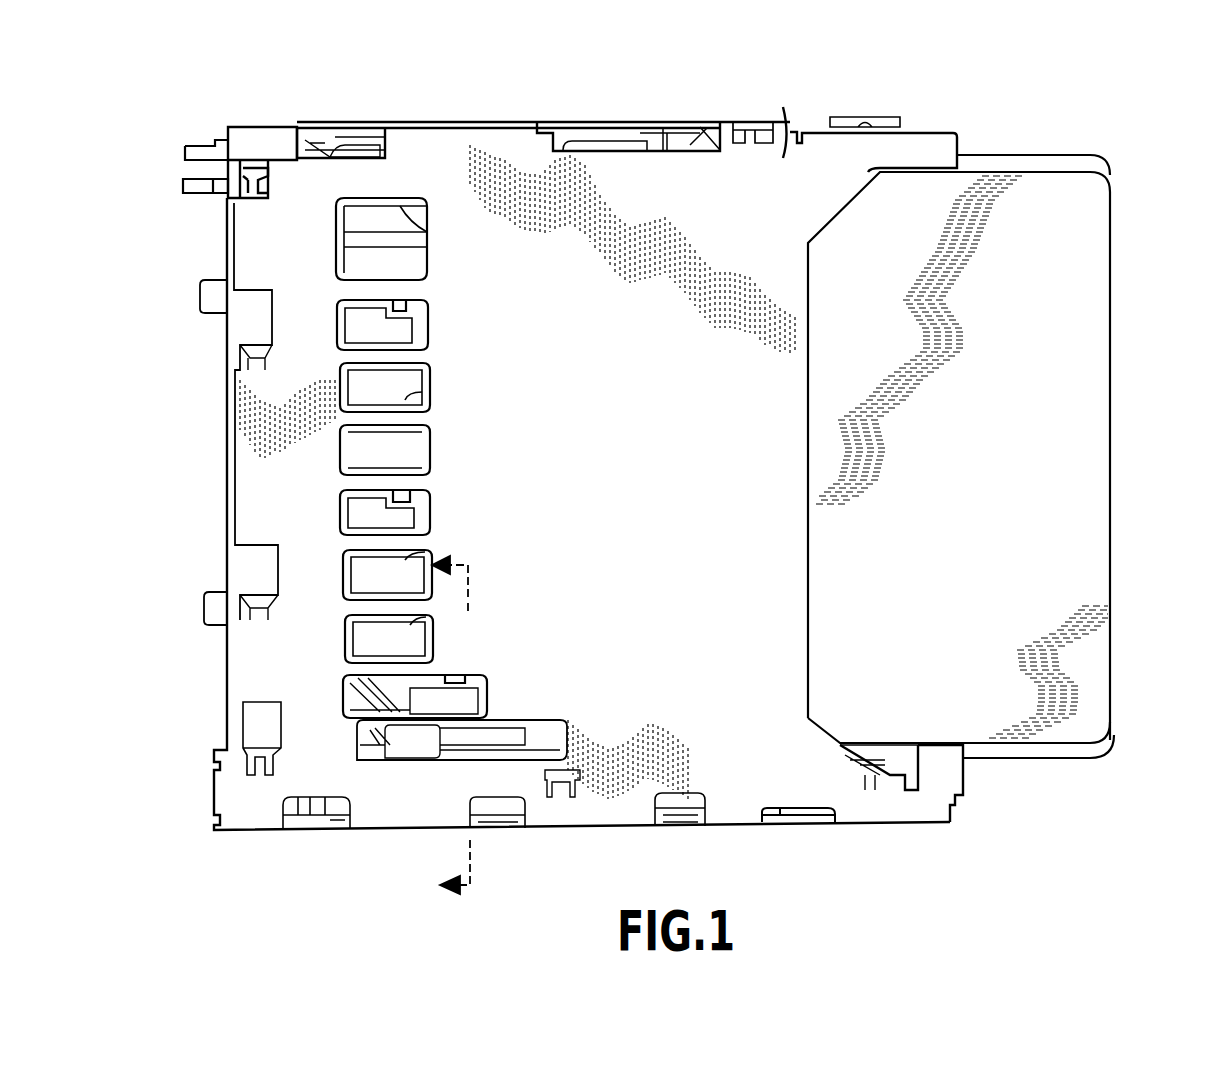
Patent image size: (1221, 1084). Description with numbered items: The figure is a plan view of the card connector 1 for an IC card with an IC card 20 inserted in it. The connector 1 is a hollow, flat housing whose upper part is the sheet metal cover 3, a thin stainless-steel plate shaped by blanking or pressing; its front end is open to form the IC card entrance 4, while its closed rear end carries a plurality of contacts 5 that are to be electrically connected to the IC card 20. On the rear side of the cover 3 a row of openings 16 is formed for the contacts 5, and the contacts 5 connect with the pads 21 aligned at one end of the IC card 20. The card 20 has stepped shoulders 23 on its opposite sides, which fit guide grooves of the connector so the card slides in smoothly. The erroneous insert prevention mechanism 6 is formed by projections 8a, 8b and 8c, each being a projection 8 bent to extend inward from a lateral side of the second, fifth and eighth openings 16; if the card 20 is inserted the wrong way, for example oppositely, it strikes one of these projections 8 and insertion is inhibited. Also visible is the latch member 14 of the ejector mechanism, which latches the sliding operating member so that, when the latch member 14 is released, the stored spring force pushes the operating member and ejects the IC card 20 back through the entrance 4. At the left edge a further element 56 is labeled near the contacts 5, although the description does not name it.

The card connector 1 is at (958, 72).
The sheet metal cover 3 is at (785, 150).
The IC card entrance 4 is at (810, 549).
The contact 5 is at (165, 157).
The terminal portion 56 is at (186, 188).
The erroneous insert prevention mechanism 6 is at (410, 302).
The contact 8 is at (963, 798).
The projection 8a is at (405, 312).
The projection 8b is at (410, 502).
The projection 8c is at (465, 692).
The latch member 14 is at (810, 822).
The opening 16 is at (428, 245).
The IC card 20 is at (1116, 314).
The pad 21 is at (420, 225).
The stepped shoulder 23 is at (1038, 157).